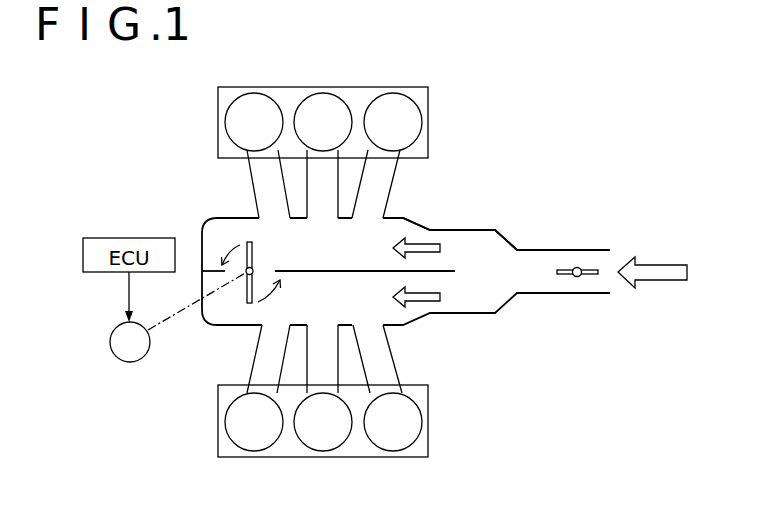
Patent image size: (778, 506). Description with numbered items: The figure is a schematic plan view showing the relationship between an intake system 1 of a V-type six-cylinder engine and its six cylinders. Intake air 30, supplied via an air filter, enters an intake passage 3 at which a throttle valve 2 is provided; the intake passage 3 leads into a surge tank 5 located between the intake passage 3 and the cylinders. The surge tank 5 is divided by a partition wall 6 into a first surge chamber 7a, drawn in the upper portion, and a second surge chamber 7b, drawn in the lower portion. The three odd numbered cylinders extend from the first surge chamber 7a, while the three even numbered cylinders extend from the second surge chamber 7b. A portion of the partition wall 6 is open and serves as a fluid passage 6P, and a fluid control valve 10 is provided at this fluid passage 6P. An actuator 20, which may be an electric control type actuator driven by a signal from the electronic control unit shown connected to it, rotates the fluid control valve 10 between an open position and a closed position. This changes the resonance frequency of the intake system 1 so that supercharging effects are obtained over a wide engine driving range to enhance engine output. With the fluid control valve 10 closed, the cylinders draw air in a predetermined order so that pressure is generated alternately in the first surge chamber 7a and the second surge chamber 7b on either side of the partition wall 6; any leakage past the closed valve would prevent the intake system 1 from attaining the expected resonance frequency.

The intake system 1 is at (501, 188).
The throttle valve 2 is at (567, 268).
The intake passage 3 is at (575, 300).
The surge tank 5 is at (421, 227).
The partition wall 6 is at (444, 270).
The fluid passage 6P is at (264, 270).
The first surge chamber 7a is at (337, 258).
The second surge chamber 7b is at (337, 314).
The fluid control valve 10 is at (250, 304).
The actuator 20 is at (110, 339).
The intake air 30 is at (658, 263).